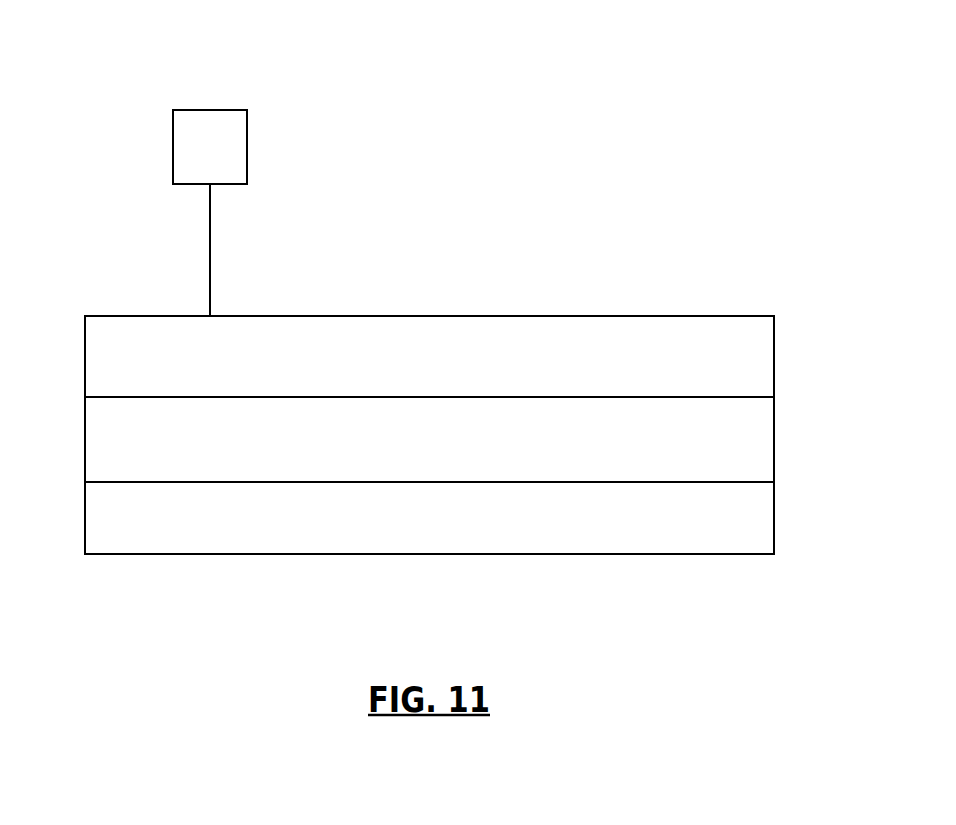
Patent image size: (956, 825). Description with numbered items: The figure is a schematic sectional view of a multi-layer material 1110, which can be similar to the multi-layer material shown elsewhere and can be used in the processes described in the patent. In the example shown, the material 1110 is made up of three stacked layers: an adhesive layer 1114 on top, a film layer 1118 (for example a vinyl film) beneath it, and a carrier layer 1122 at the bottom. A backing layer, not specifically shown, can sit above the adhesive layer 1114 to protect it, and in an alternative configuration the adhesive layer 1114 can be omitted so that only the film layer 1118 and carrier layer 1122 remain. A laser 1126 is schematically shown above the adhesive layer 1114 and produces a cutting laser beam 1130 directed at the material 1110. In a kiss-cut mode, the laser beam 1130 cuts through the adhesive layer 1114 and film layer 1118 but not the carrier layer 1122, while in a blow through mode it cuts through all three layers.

The multi-layer material 1110 is at (80, 311).
The adhesive layer 1114 is at (760, 360).
The film layer 1118 is at (760, 437).
The carrier layer 1122 is at (762, 519).
The laser 1126 is at (211, 109).
The laser beam 1130 is at (211, 235).